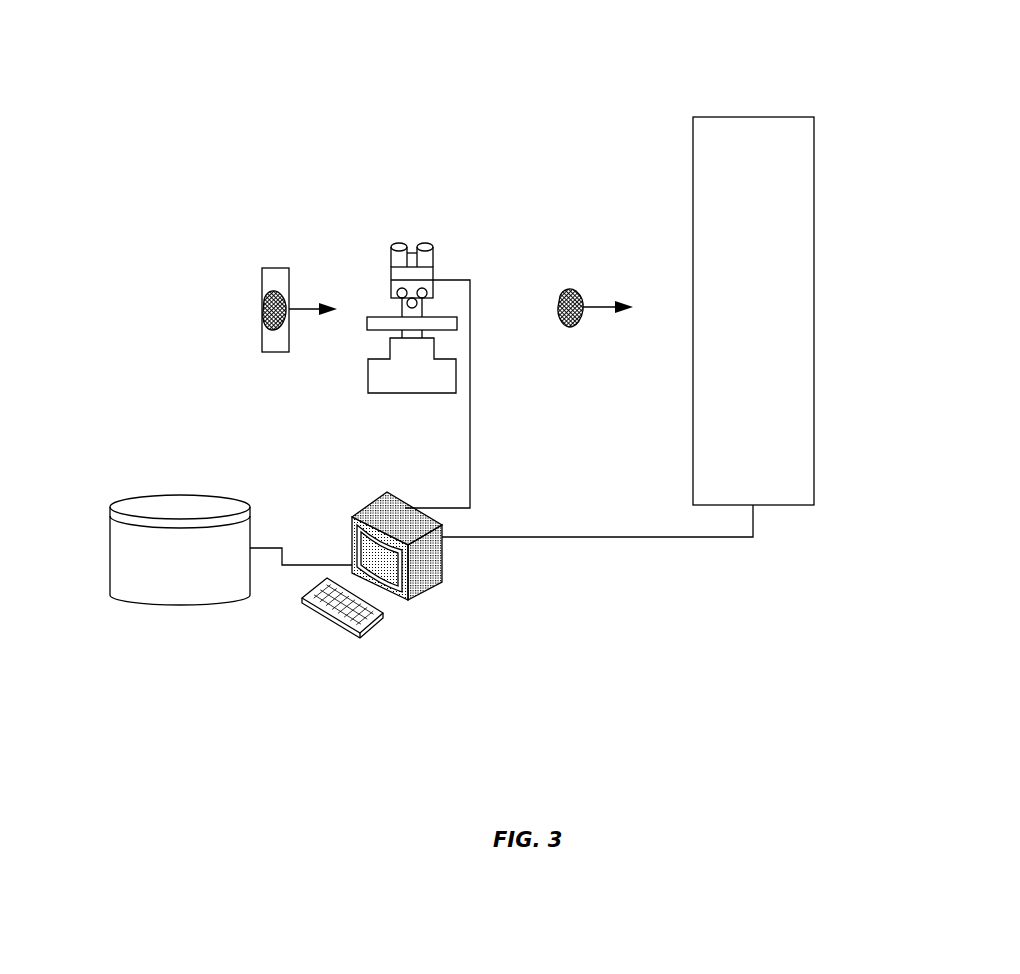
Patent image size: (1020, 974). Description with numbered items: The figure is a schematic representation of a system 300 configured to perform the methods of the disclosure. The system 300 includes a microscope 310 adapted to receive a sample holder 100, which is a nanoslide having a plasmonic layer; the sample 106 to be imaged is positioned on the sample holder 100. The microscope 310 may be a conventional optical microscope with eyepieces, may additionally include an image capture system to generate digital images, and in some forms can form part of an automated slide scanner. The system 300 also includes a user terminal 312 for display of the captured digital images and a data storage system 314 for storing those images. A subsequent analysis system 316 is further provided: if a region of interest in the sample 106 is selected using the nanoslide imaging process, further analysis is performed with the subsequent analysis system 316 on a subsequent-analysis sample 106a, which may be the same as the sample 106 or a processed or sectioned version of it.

The system 300 is at (174, 152).
The sample holder 100 is at (290, 268).
The sample 106 is at (262, 310).
The subsequent-analysis sample 106a is at (565, 327).
The microscope 310 is at (434, 265).
The user terminal 312 is at (443, 582).
The data storage system 314 is at (182, 605).
The subsequent analysis system 316 is at (755, 117).